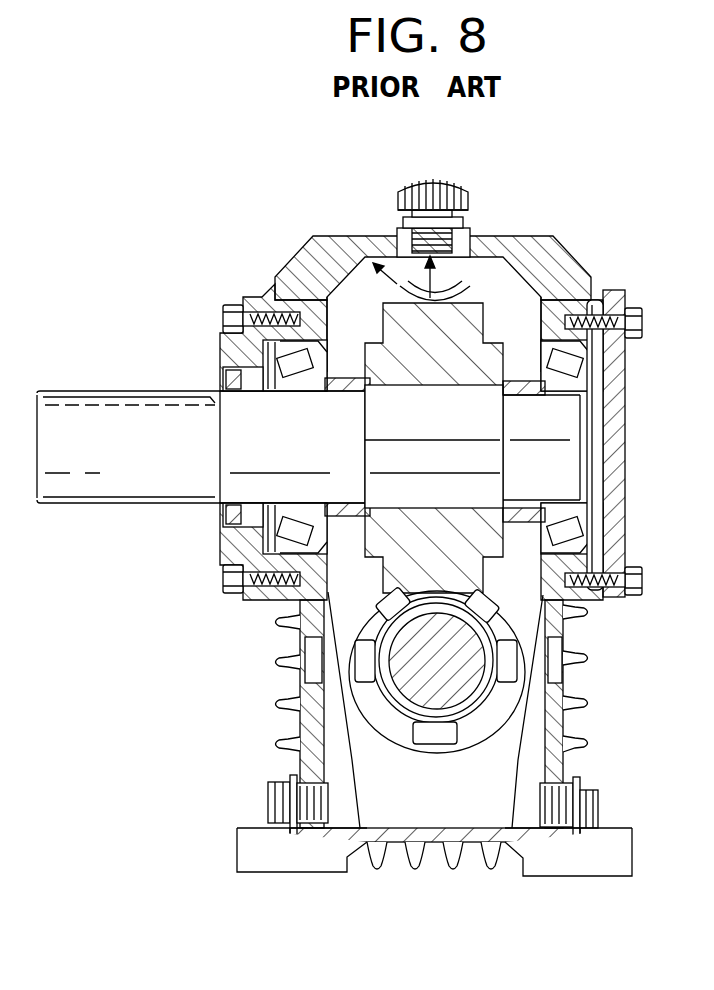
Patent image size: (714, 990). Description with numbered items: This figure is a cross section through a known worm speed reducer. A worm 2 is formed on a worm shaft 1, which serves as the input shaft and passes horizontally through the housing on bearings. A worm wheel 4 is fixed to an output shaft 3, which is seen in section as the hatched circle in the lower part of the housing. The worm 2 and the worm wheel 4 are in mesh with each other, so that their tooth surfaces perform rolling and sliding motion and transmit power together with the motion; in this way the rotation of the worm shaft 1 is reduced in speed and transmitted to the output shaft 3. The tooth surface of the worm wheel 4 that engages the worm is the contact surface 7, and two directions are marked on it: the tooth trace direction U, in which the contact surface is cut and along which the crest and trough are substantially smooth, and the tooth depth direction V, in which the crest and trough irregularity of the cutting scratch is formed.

The worm shaft 1 is at (455, 697).
The worm 2 is at (482, 625).
The output shaft 3 is at (230, 405).
The worm wheel 4 is at (475, 327).
The contact surface 7 is at (460, 287).
The tooth trace direction U is at (389, 290).
The tooth depth direction V is at (428, 272).